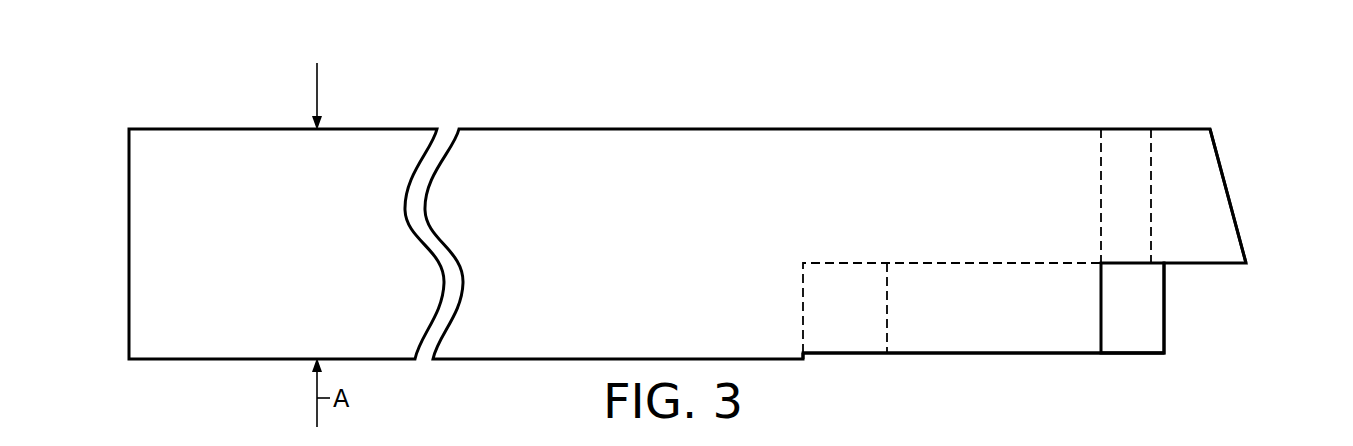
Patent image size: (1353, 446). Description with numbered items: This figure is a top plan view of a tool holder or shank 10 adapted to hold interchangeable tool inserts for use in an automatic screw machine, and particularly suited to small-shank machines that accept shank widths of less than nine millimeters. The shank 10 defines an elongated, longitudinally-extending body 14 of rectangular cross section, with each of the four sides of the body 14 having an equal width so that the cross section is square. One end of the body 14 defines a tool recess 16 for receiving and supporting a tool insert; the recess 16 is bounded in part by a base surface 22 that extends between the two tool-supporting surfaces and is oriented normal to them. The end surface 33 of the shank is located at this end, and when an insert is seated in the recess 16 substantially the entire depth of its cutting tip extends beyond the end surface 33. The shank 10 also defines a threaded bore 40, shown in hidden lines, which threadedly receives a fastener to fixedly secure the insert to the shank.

The shank 10 is at (660, 117).
The body 14 is at (529, 297).
The tool recess 16 is at (957, 370).
The base surface 22 is at (1178, 268).
The end surface 33 is at (1233, 212).
The threaded bore 40 is at (1102, 212).